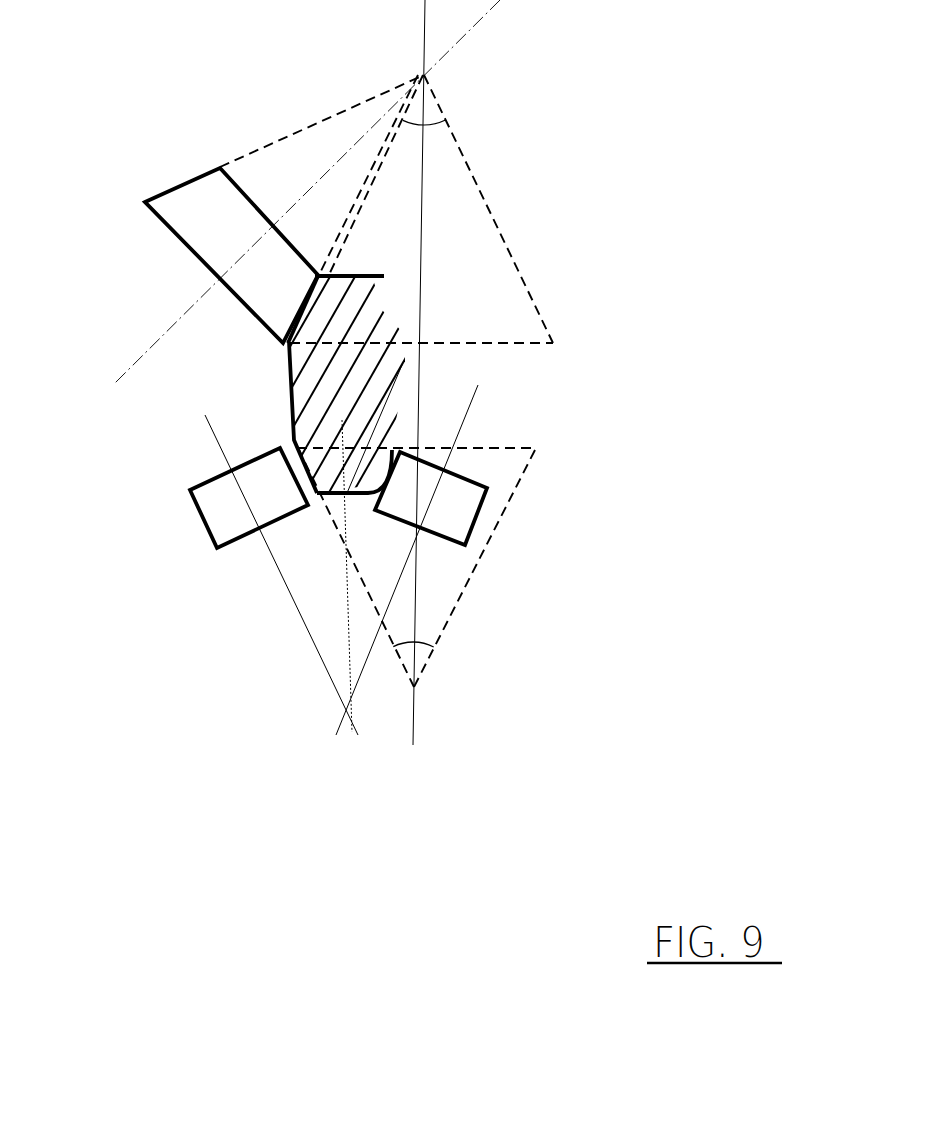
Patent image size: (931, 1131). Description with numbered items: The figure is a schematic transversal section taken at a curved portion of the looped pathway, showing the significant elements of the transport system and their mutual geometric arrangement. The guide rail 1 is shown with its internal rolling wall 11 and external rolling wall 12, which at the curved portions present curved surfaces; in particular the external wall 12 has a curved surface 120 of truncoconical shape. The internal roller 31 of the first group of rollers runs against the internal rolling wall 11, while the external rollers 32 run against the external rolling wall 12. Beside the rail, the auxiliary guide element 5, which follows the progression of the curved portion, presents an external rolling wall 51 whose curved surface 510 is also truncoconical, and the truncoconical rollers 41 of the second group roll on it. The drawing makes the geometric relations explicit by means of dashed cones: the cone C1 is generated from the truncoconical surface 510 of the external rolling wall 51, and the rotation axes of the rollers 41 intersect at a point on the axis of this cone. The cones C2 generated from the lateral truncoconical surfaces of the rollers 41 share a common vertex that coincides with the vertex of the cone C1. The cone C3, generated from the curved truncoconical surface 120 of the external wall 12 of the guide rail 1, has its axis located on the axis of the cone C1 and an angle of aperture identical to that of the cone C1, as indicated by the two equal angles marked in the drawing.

The guide rail 1 is at (345, 490).
The auxiliary guide element 5 is at (372, 276).
The internal rolling wall 11 is at (390, 478).
The external rolling wall 12 is at (313, 495).
The internal roller 31 is at (463, 520).
The external rollers 32 is at (203, 495).
The truncoconical rollers 41 is at (198, 193).
The external rolling wall 51 is at (313, 313).
The curved surface 120 is at (298, 468).
The curved surface 510 is at (330, 287).
The cone C1 is at (497, 223).
The cones C2 is at (283, 138).
The cone C3 is at (470, 578).